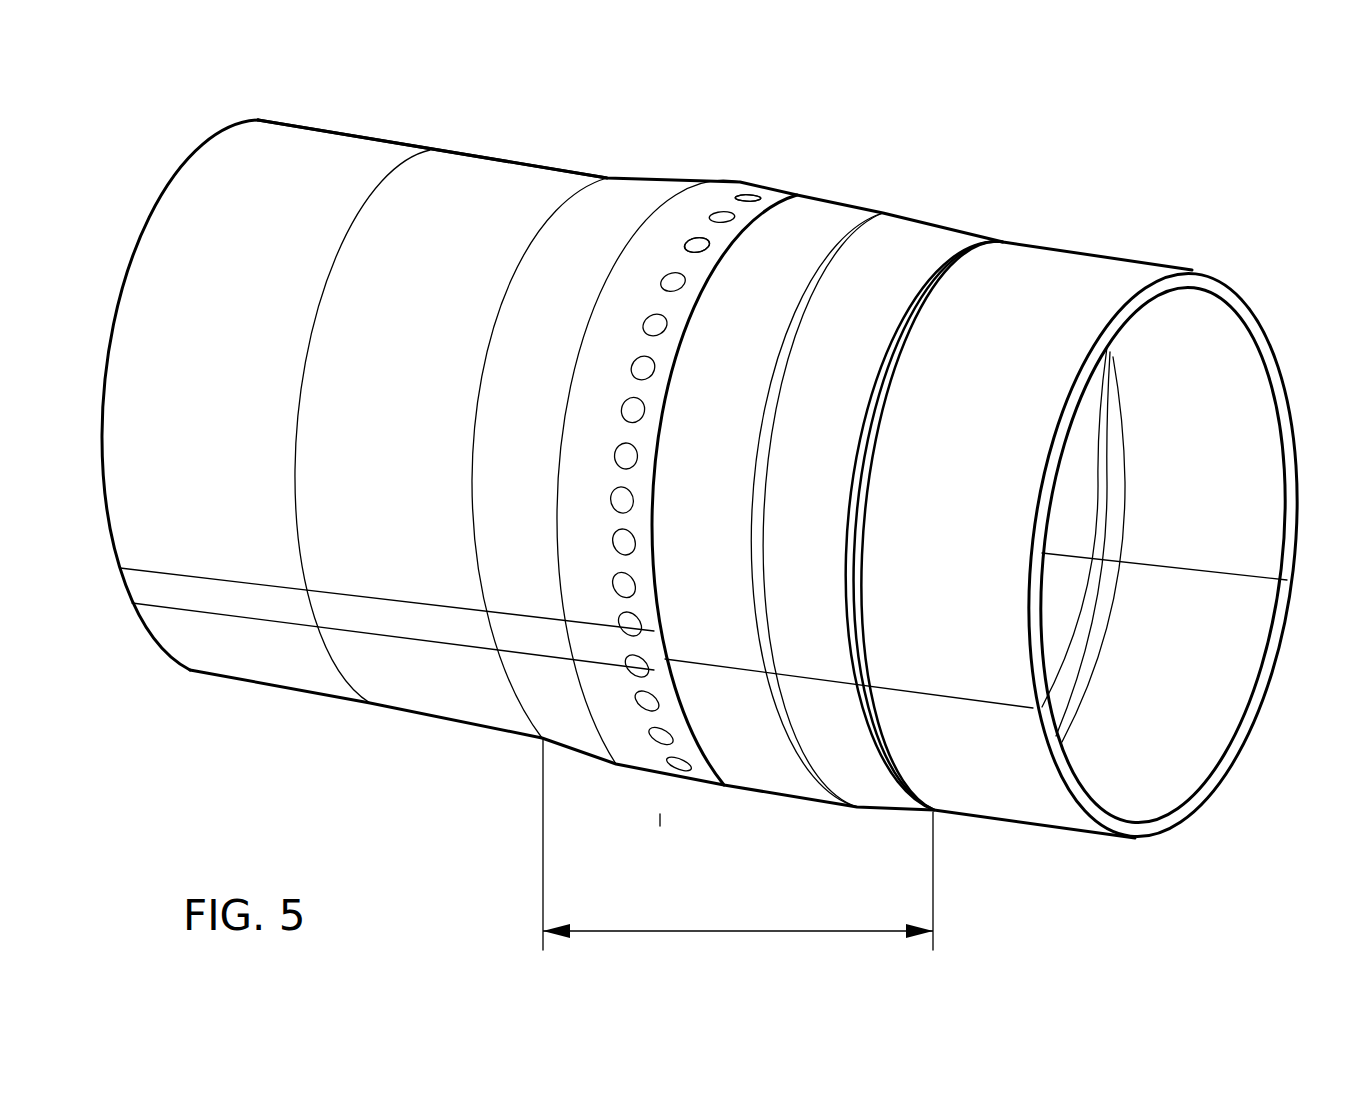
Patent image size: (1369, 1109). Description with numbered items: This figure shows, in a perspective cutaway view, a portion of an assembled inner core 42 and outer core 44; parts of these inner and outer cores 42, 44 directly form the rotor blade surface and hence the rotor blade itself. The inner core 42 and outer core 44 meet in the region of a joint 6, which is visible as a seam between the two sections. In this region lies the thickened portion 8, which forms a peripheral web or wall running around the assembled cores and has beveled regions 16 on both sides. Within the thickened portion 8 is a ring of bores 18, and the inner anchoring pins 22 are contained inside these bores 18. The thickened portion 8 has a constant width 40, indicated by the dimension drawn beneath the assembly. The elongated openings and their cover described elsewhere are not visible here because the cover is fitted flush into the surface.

The joint 6 is at (732, 788).
The thickened portion 8 is at (660, 826).
The beveled regions 16 is at (628, 192).
The bores 18 is at (697, 239).
The inner anchoring pins 22 is at (707, 249).
The constant width 40 is at (760, 932).
The inner core 42 is at (1040, 206).
The outer core 44 is at (553, 135).